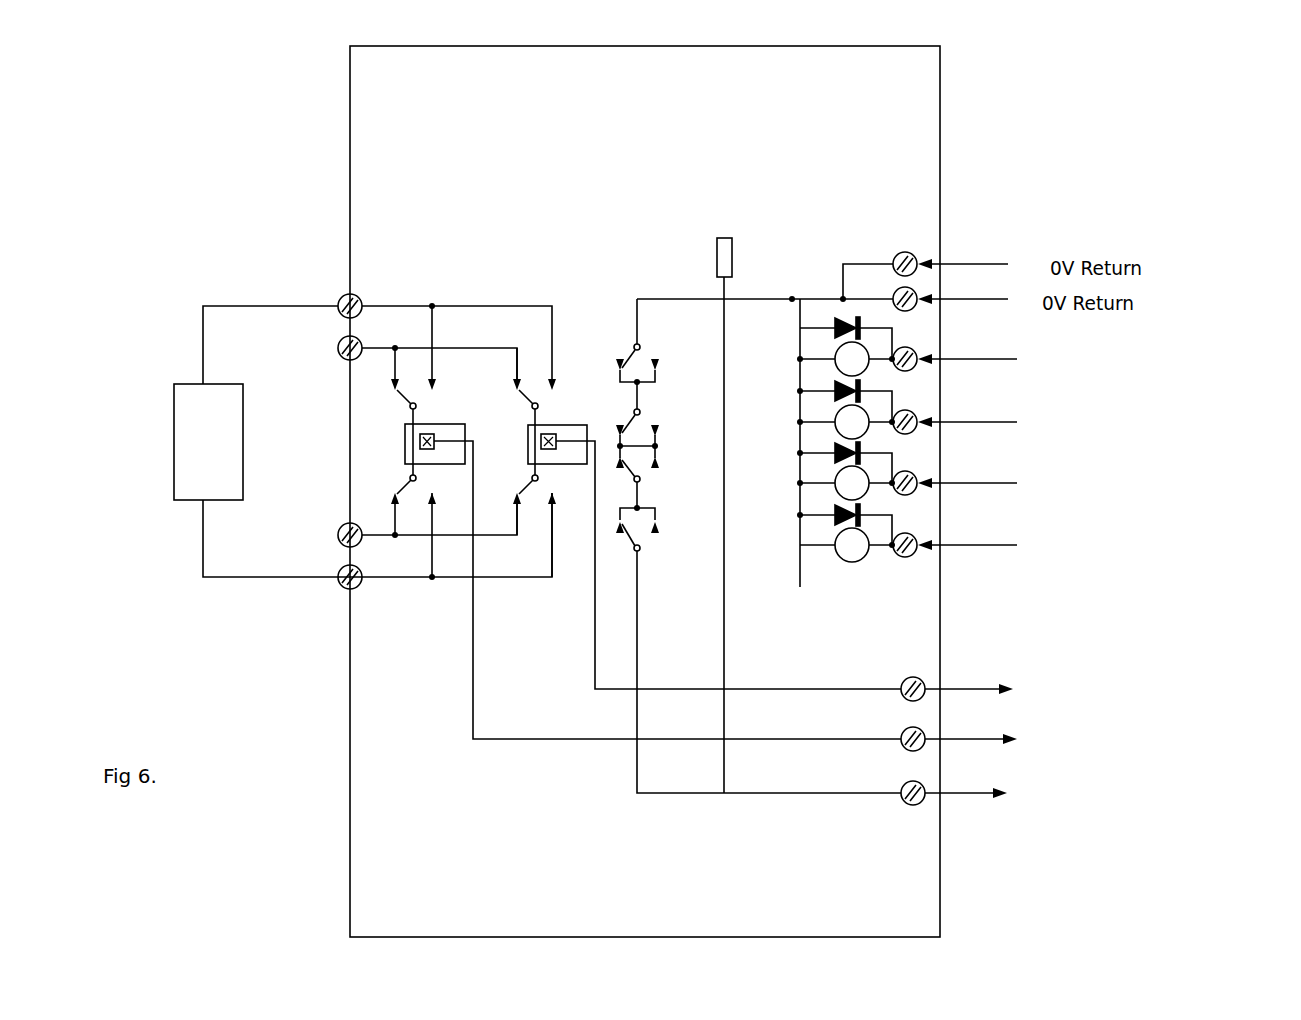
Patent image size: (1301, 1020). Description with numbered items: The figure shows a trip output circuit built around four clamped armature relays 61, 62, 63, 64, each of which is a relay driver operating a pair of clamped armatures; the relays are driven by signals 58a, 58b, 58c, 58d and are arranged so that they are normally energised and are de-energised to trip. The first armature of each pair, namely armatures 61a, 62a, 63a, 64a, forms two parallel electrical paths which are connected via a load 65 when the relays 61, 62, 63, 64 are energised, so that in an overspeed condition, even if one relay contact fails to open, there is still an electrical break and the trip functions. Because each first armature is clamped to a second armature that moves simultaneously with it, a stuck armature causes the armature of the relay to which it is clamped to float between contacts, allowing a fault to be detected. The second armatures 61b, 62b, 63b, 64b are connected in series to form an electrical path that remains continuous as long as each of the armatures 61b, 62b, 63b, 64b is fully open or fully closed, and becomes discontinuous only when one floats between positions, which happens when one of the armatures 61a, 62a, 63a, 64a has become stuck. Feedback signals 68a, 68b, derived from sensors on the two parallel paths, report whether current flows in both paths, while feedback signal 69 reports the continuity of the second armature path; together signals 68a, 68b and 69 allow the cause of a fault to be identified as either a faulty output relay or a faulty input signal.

The load 65 is at (208, 442).
The first armature of relay 63 63a is at (388, 394).
The first armature of relay 64 64a is at (388, 488).
The first armature of relay 61 61a is at (511, 394).
The first armature of relay 62 62a is at (511, 488).
The second armature of relay 61 61b is at (663, 376).
The second armature of relay 63 63b is at (663, 429).
The second armature of relay 64 64b is at (663, 477).
The second armature of relay 62 62b is at (758, 649).
The relay driver 61 is at (847, 346).
The relay driver 62 is at (847, 409).
The relay driver 63 is at (847, 471).
The relay driver 64 is at (847, 533).
The relay drive signal 58a is at (1043, 369).
The relay drive signal 58b is at (1043, 432).
The relay drive signal 58c is at (1043, 494).
The relay drive signal 58d is at (1043, 556).
The feedback signal 68a is at (1090, 702).
The feedback signal 68b is at (1088, 750).
The feedback signal 69 is at (1081, 805).